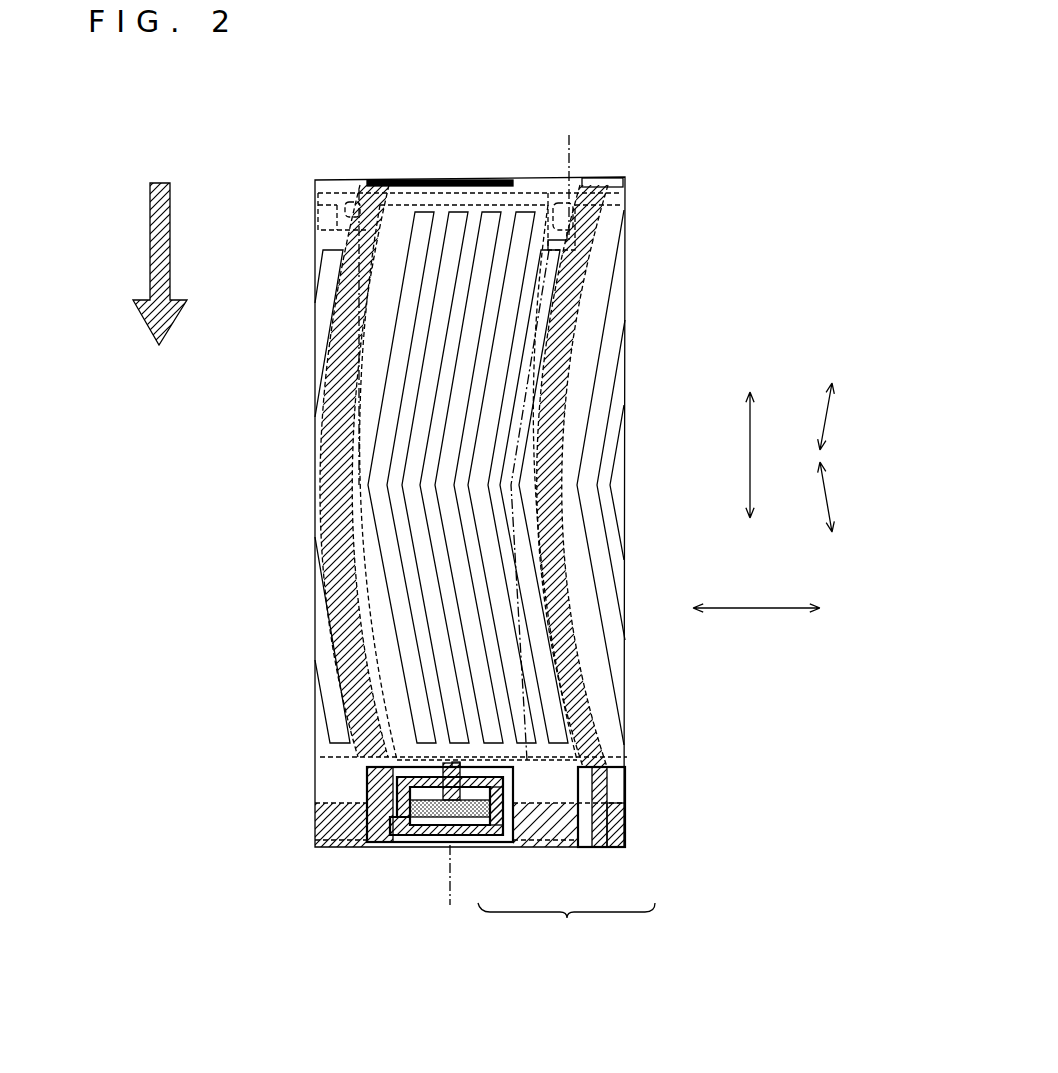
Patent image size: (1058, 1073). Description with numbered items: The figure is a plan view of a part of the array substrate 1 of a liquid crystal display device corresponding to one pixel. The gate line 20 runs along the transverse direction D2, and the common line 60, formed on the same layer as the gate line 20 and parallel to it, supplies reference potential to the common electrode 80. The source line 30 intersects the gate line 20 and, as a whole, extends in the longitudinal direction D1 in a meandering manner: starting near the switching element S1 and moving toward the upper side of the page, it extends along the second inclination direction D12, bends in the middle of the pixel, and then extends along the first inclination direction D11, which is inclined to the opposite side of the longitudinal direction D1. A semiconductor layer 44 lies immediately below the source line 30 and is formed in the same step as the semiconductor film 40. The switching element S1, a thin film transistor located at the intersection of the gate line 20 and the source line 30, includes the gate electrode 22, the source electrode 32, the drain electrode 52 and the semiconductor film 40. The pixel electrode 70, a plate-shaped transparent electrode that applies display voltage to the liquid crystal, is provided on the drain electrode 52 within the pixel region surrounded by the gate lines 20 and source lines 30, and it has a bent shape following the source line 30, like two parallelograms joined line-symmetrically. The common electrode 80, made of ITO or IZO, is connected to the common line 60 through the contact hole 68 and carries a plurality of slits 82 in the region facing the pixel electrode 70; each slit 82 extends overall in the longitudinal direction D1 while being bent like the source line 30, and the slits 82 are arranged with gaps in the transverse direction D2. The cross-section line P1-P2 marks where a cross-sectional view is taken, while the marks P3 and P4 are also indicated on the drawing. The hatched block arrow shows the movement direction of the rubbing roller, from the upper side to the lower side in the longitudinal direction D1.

The array substrate 1 is at (399, 153).
The slit 82 is at (452, 210).
The common electrode 80 is at (517, 195).
The common line 60 is at (620, 193).
The contact hole 68 is at (608, 228).
The pixel electrode 70 is at (330, 603).
The semiconductor layer 44 is at (345, 650).
The gate line 20 is at (315, 808).
The source line 30 is at (383, 843).
The source electrode 32 is at (482, 840).
The semiconductor film 40 is at (470, 820).
The drain electrode 52 is at (500, 795).
The gate electrode 22 is at (603, 840).
The cross-section line end point P1 is at (550, 427).
The cross-section line end point P2 is at (447, 898).
The position P3 is at (360, 265).
The position P4 is at (360, 728).
The switching element S1 is at (566, 929).
The longitudinal direction D1 is at (732, 455).
The first inclination direction D11 is at (805, 416).
The second inclination direction D12 is at (805, 497).
The transverse direction D2 is at (756, 587).